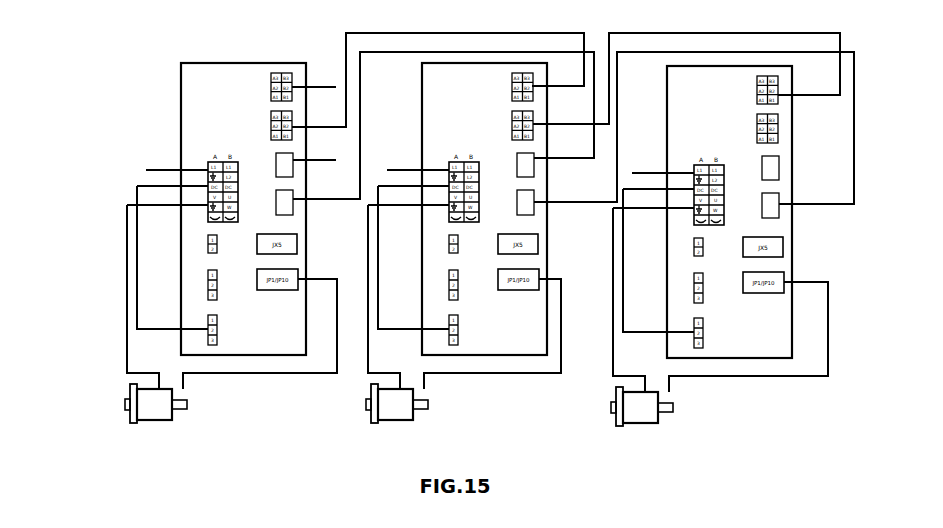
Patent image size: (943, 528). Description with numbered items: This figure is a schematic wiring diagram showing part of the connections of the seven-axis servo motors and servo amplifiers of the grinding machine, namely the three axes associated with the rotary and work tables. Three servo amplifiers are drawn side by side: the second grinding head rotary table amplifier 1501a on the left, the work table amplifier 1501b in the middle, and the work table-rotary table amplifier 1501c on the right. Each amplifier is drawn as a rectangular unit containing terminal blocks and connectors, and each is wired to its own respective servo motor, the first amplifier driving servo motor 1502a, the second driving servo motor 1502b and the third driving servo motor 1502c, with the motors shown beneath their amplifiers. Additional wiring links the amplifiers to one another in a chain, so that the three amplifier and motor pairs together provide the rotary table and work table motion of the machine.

The second grinding head rotary table amplifier 1501a is at (181, 121).
The work table amplifier 1501b is at (464, 226).
The work table-rotary table amplifier 1501c is at (720, 229).
The servo motor 1502a is at (131, 421).
The servo motor 1502b is at (360, 403).
The servo motor 1502c is at (604, 406).